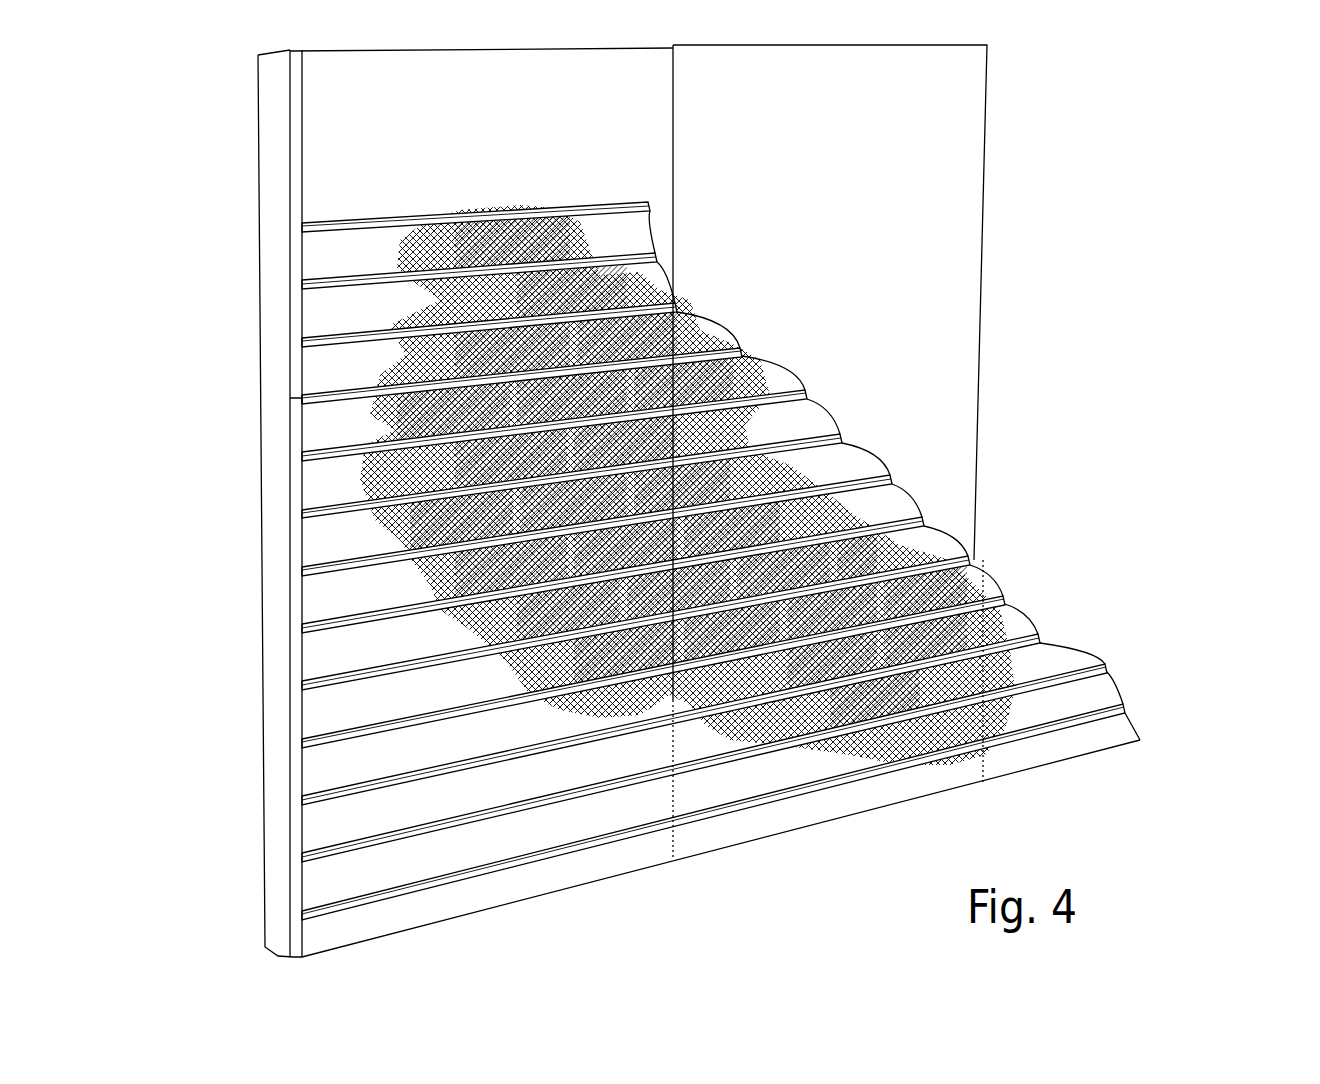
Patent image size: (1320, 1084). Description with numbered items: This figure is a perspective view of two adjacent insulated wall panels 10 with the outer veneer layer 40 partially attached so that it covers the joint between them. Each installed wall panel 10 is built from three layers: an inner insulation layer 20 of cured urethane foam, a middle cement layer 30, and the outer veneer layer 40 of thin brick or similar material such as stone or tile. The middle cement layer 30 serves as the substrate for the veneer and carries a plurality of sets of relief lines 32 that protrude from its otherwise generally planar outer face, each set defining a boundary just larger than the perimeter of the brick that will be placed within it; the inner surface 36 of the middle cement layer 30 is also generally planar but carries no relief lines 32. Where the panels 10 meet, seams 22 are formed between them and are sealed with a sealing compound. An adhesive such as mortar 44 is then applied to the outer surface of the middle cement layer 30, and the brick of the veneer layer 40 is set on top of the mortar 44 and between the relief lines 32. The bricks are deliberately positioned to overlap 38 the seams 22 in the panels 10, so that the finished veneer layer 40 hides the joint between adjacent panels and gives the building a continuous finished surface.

The insulated wall panel 10 is at (1158, 845).
The inner insulation layer 20 is at (938, 220).
The seams 22 is at (675, 67).
The middle cement layer 30 is at (353, 310).
The relief lines 32 is at (293, 403).
The inner surface 36 is at (287, 258).
The overlap 38 is at (745, 380).
The outer veneer layer 40 is at (390, 523).
The mortar 44 is at (1128, 717).